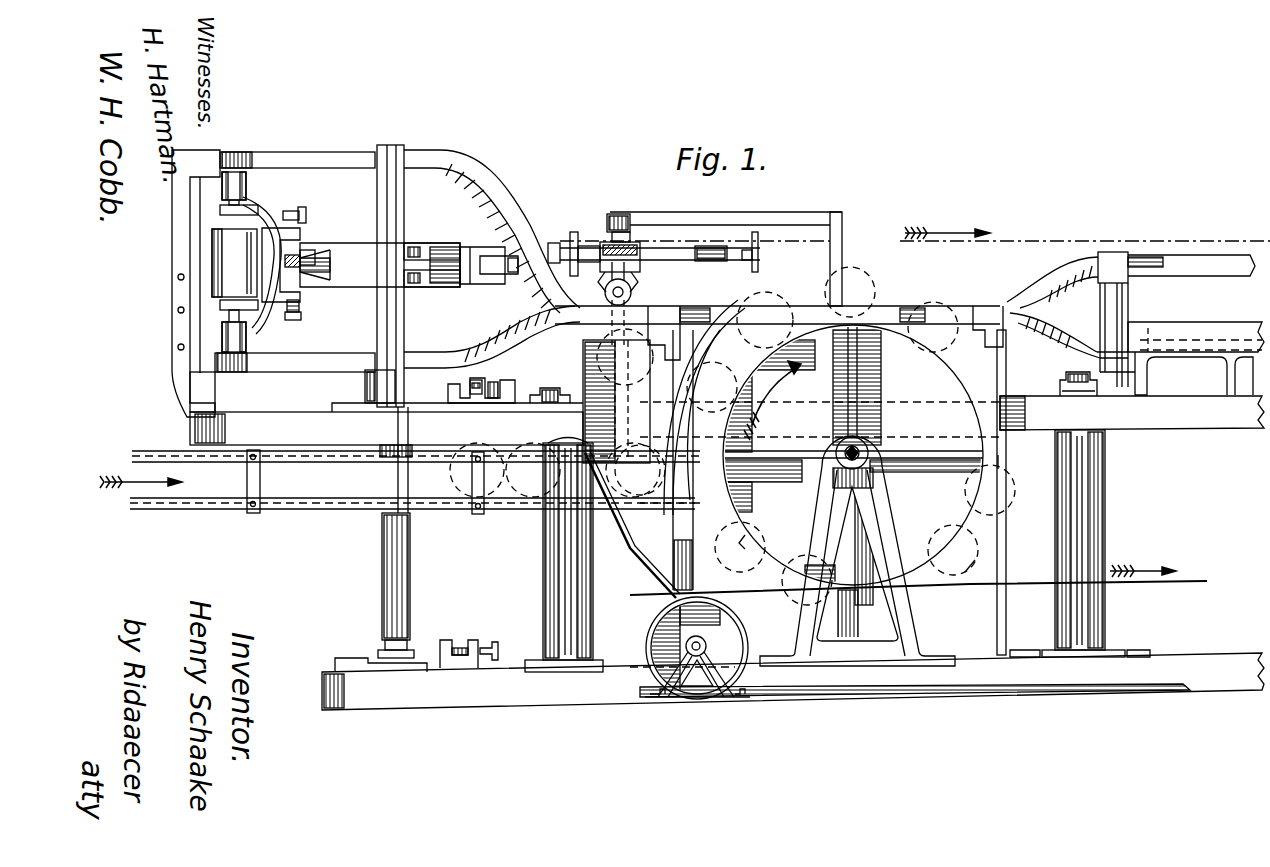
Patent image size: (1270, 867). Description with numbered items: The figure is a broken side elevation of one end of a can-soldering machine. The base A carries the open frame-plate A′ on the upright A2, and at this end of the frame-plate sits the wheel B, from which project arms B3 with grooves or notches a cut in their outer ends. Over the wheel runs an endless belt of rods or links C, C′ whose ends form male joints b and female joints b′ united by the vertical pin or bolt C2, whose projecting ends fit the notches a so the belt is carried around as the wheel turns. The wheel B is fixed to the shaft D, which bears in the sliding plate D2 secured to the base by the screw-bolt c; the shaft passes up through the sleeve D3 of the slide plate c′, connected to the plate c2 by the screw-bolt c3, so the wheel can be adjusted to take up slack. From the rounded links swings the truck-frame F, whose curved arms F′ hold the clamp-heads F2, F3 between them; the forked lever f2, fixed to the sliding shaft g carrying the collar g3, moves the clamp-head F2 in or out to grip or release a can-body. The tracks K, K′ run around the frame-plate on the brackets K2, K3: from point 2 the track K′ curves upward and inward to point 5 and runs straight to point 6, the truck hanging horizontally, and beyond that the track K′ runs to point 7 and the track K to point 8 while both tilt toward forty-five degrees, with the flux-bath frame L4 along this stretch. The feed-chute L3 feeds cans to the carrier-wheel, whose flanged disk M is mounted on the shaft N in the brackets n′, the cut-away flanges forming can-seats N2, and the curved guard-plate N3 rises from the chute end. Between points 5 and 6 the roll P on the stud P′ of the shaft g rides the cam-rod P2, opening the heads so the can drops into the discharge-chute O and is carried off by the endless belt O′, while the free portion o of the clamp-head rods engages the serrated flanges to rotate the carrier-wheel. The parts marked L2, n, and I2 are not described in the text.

The track K is at (318, 158).
The track K′ is at (318, 372).
The bracket K2 is at (180, 240).
The bracket K3 is at (398, 147).
The point 2 is at (435, 160).
The cylinder L2 is at (225, 272).
The feed-chute L3 is at (318, 494).
The flux-bath frame L4 is at (1186, 325).
The truck-frame F is at (632, 289).
The curved arms F′ is at (250, 198).
The clamp-head F2 is at (232, 216).
The clamp-head F3 is at (222, 300).
The lever f2 is at (306, 216).
The free portion of clamp-head rods o is at (262, 210).
The shaft g is at (302, 244).
The collar g3 is at (302, 309).
The wheel B is at (420, 255).
The arms B3 is at (482, 276).
The grooves or notches a is at (516, 259).
The shaft D is at (410, 577).
The sliding plate D2 is at (362, 668).
The sleeve D3 is at (366, 388).
The screw-bolt c is at (462, 645).
The slide plate c′ is at (332, 404).
The plate c2 is at (498, 402).
The screw-bolt c3 is at (476, 381).
The point 5 is at (563, 309).
The point 6 is at (1005, 304).
The point 7 is at (1096, 344).
The point 8 is at (1086, 262).
The male joints b is at (556, 248).
The female joints b′ is at (760, 256).
The rod or link C is at (640, 254).
The rod or link C′ is at (700, 261).
The vertical pin or bolt C2 is at (575, 232).
The roll P is at (625, 214).
The stud P′ is at (638, 226).
The cam-rod P2 is at (682, 222).
The shaft N is at (866, 446).
The can-seats N2 is at (760, 535).
The curved guard-plate N3 is at (698, 340).
The lugs n is at (1006, 468).
The brackets n′ is at (878, 502).
The flanged disk M is at (1006, 508).
The discharge-chute O is at (630, 535).
The endless belt O′ is at (940, 591).
The rail clamps I2 is at (462, 470).
The base A is at (1155, 662).
The open frame-plate A′ is at (1208, 420).
The upright A2 is at (553, 537).